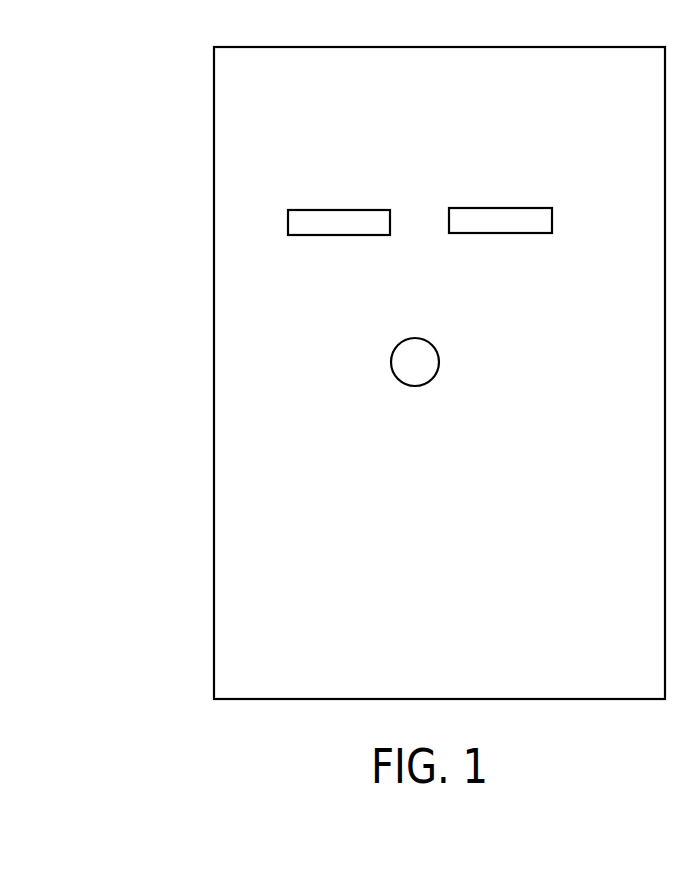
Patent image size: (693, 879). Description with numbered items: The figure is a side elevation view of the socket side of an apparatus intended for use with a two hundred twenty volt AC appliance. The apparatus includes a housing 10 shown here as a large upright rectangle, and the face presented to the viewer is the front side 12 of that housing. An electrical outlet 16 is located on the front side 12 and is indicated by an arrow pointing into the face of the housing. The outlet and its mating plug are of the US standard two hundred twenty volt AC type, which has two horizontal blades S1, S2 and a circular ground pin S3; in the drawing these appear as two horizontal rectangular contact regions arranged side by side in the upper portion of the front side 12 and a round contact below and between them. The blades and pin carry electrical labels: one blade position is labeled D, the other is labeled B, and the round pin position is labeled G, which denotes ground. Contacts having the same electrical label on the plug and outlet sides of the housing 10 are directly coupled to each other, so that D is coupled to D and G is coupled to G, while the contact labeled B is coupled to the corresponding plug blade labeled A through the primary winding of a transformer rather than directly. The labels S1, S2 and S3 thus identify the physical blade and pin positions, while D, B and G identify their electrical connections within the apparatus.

The housing 10 is at (214, 213).
The front side 12 is at (319, 608).
The electrical outlet 16 is at (517, 400).
The electrical label D is at (335, 209).
The horizontal blade S1 is at (330, 236).
The horizontal blade S2 is at (483, 208).
The circular ground pin S3 is at (400, 380).
The electrical label B is at (517, 208).
The electrical label G is at (440, 342).